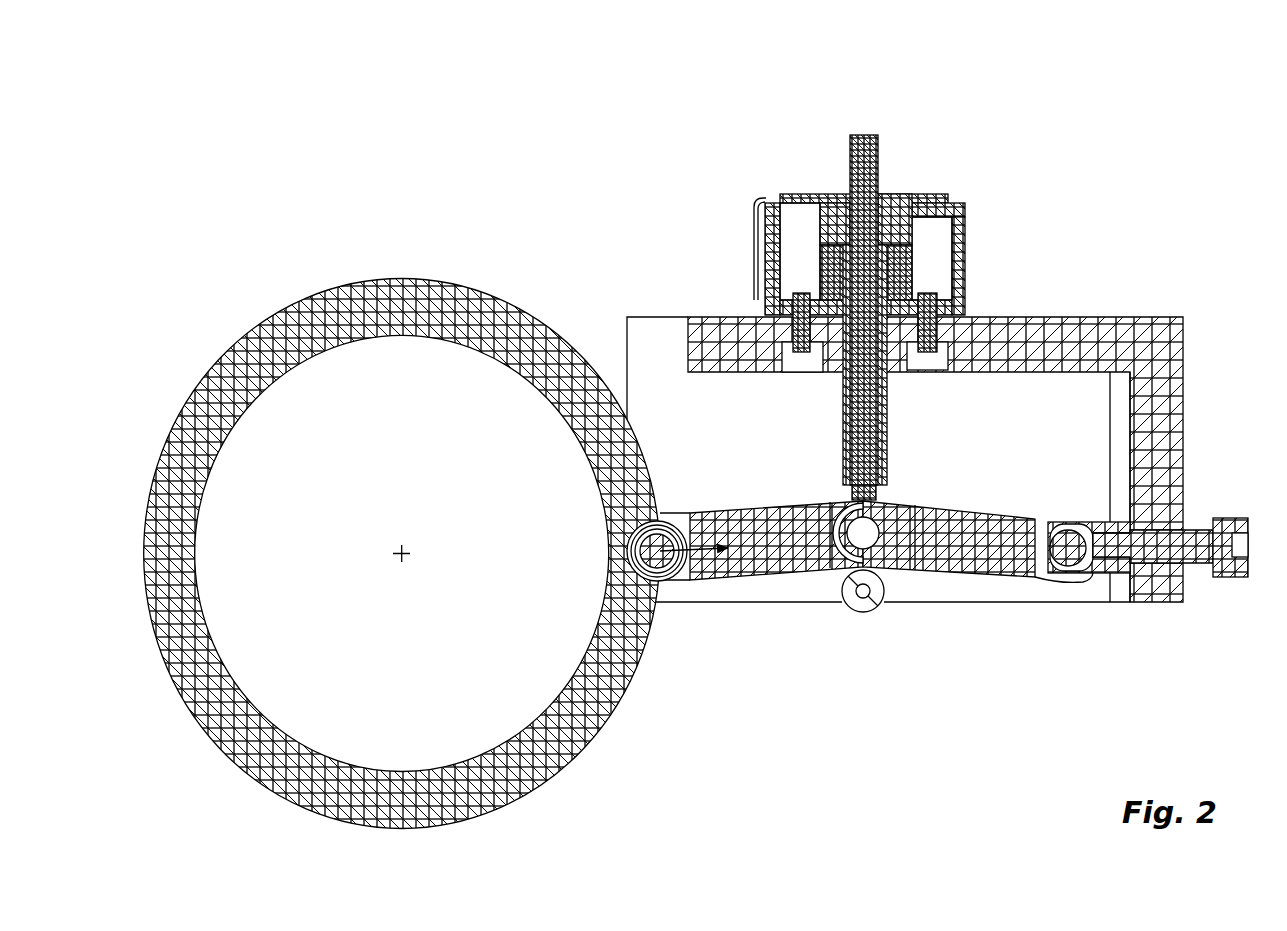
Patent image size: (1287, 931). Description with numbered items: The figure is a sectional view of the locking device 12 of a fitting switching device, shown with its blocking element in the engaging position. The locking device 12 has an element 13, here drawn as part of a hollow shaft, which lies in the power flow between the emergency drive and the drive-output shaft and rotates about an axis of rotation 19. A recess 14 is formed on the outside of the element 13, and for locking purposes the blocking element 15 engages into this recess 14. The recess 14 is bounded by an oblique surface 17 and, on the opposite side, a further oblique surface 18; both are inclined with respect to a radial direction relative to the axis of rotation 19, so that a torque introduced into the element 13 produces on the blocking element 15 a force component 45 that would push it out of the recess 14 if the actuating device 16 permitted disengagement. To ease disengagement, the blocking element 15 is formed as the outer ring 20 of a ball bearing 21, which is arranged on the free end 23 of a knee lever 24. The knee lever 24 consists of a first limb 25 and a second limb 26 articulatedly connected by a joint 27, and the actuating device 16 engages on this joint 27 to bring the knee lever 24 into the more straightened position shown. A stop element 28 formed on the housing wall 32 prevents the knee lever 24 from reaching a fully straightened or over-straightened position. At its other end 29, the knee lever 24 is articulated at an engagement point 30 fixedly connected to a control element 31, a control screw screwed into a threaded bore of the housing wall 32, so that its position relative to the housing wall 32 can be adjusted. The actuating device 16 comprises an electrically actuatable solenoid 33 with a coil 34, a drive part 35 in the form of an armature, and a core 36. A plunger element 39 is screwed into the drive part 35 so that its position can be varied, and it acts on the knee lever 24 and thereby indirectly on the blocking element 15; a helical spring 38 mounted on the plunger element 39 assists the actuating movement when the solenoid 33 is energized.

The locking device 12 is at (1125, 109).
The element 13 is at (388, 300).
The recess 14 is at (673, 592).
The blocking element 15 is at (662, 494).
The actuating device 16 is at (876, 650).
The oblique surface 17 is at (650, 592).
The further oblique surface 18 is at (642, 513).
The axis of rotation 19 is at (404, 562).
The outer ring 20 is at (684, 570).
The ball bearing 21 is at (696, 553).
The free end 23 is at (690, 480).
The knee lever 24 is at (930, 603).
The first limb 25 is at (798, 567).
The second limb 26 is at (965, 558).
The joint 27 is at (870, 542).
The stop element 28 is at (858, 622).
The end 29 is at (1045, 606).
The engagement point 30 is at (1068, 540).
The control element 31 is at (1193, 556).
The housing wall 32 is at (1170, 380).
The solenoid 33 is at (900, 230).
The coil 34 is at (940, 255).
The drive part 35 is at (836, 214).
The core 36 is at (900, 282).
The spring 38 is at (889, 418).
The plunger element 39 is at (870, 167).
The component 45 is at (690, 517).